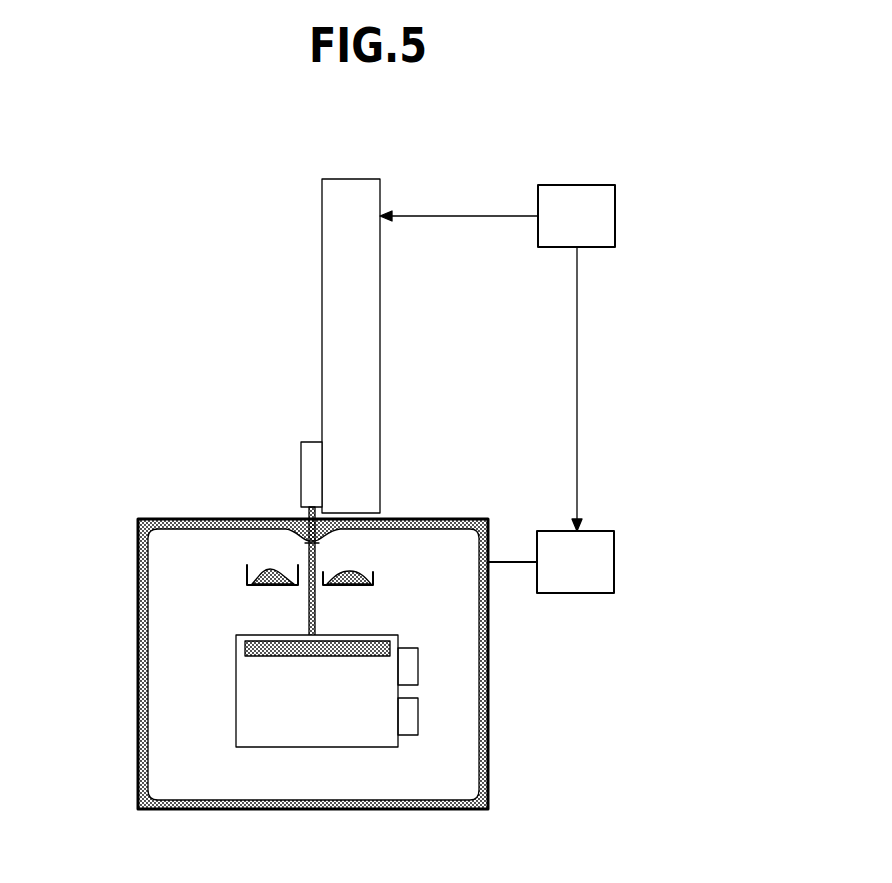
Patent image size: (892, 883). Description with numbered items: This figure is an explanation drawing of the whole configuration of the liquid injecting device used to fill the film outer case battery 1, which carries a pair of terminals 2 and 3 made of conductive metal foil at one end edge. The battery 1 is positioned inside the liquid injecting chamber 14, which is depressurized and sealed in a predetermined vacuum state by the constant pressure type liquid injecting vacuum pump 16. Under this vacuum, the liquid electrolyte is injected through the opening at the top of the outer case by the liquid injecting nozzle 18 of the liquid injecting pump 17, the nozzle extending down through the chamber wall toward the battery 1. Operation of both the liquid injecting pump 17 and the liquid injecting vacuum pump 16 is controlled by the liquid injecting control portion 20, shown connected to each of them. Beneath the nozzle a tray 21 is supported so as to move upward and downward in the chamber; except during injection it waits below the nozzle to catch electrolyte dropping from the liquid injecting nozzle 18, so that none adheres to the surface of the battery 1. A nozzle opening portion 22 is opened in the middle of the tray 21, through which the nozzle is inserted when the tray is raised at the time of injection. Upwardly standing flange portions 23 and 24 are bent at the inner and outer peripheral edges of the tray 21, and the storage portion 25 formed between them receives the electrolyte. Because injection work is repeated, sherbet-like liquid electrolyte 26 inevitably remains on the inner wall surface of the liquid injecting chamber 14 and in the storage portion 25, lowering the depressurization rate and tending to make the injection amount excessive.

The film outer case battery 1 is at (295, 737).
The positive electrode terminal 2 is at (410, 665).
The negative electrode terminal 3 is at (412, 716).
The liquid injecting chamber 14 is at (488, 764).
The liquid injecting vacuum pump 16 is at (614, 562).
The liquid injecting pump 17 is at (380, 311).
The liquid injecting nozzle 18 is at (311, 530).
The liquid injecting control portion 20 is at (615, 216).
The tray 21 is at (245, 567).
The nozzle opening portion 22 is at (303, 582).
The flange portion 23 is at (373, 567).
The flange portion 24 is at (325, 572).
The storage portion 25 is at (378, 572).
The liquid electrolyte 26 is at (273, 565).